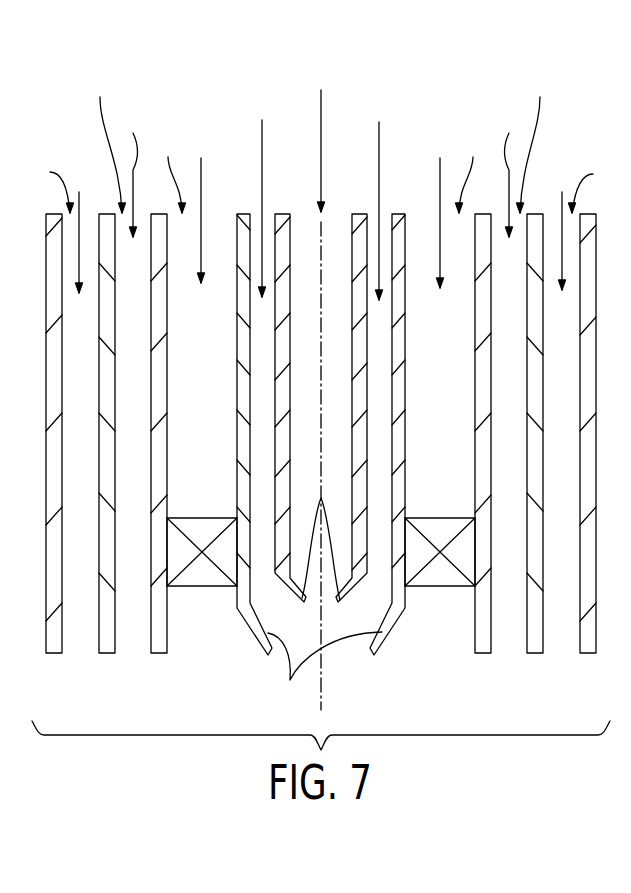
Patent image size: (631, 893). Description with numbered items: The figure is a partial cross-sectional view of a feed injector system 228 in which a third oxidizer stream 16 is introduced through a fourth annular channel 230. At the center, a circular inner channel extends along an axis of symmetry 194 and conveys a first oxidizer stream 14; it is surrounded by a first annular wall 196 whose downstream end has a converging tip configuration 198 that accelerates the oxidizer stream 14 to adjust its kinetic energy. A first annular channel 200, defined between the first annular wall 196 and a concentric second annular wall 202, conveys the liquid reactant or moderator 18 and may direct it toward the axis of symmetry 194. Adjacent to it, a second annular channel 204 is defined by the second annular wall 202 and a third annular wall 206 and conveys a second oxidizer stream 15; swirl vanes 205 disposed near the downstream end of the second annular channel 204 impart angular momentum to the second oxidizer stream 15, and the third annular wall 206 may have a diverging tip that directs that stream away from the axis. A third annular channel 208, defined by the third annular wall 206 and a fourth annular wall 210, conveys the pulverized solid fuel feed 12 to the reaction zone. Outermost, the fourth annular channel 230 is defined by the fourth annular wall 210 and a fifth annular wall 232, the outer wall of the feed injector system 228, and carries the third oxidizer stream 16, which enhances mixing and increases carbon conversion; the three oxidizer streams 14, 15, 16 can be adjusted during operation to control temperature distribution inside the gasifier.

The pulverized solid fuel feed 12 is at (321, 172).
The first oxidizer stream 14 is at (321, 110).
The second oxidizer stream 15 is at (201, 182).
The third oxidizer stream 16 is at (79, 198).
The liquid reactant or moderator 18 is at (262, 153).
The axis of symmetry 194 is at (322, 673).
The first annular wall 196 is at (290, 252).
The converging tip configuration 198 is at (325, 591).
The first annular channel 200 is at (255, 213).
The second annular wall 202 is at (237, 399).
The second annular channel 204 is at (320, 170).
The swirl vanes 205 is at (200, 518).
The third annular wall 206 is at (167, 328).
The third annular channel 208 is at (321, 143).
The fourth annular wall 210 is at (115, 618).
The feed injector system 228 is at (130, 52).
The fourth annular channel 230 is at (317, 187).
The fifth annular wall 232 is at (62, 618).